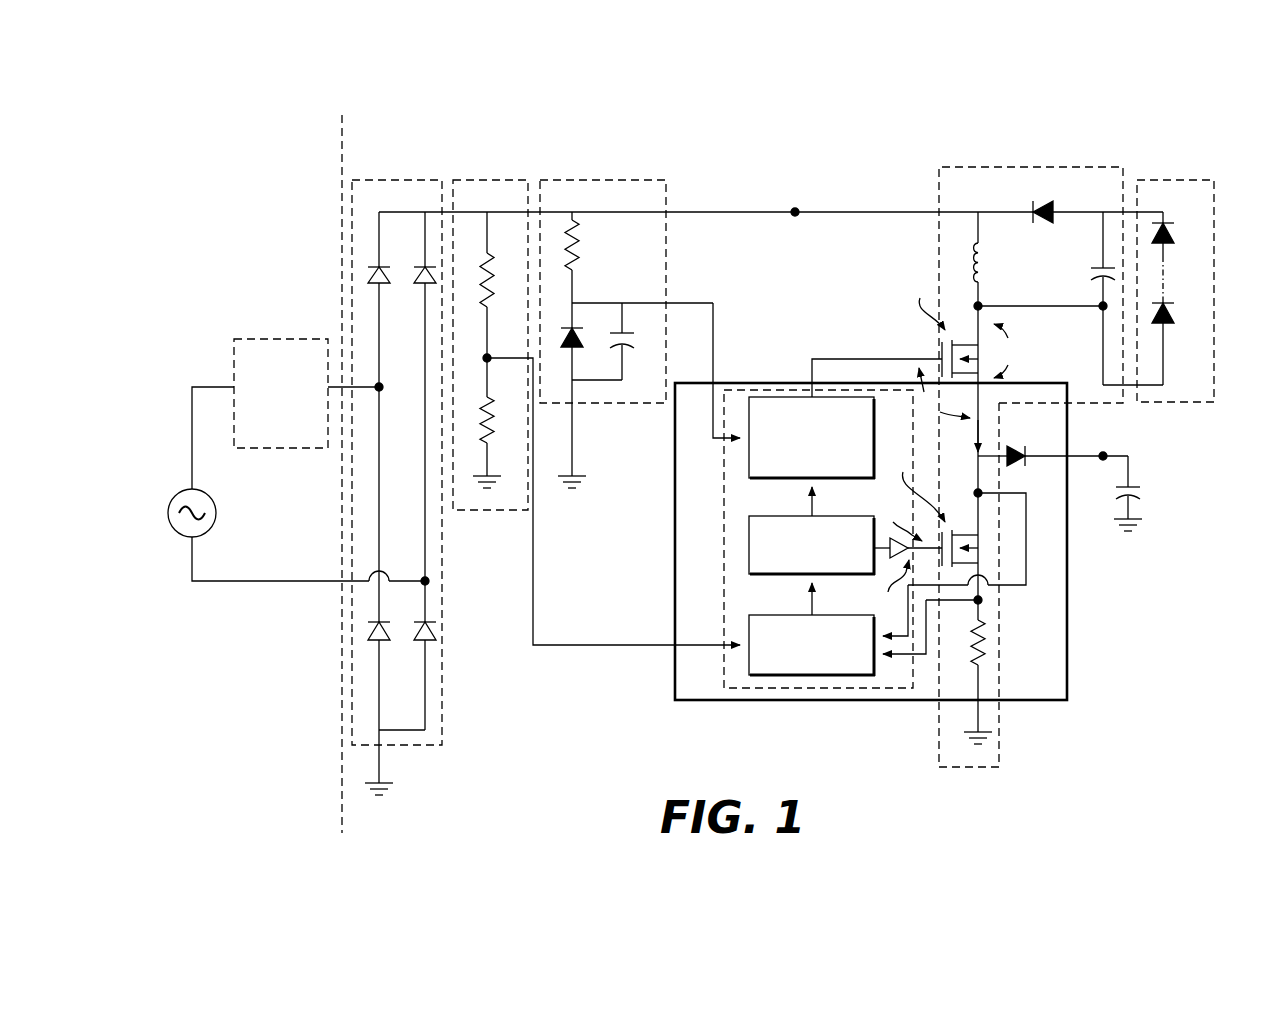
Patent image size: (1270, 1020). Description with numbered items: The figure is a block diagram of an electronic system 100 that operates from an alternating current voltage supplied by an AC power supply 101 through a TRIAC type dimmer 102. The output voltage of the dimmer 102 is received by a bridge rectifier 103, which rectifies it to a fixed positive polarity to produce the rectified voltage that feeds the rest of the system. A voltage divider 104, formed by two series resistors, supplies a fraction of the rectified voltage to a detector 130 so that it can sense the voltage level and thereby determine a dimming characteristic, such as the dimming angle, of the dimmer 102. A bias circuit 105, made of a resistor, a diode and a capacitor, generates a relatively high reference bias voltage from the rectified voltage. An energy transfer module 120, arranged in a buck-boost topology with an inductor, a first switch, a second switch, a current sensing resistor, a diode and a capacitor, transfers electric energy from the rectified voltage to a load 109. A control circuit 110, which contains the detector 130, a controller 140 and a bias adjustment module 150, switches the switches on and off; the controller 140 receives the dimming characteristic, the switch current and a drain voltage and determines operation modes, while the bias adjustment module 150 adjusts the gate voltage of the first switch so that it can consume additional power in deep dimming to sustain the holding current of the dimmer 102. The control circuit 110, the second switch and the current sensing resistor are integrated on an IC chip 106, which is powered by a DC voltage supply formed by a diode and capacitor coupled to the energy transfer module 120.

The electronic system 100 is at (1008, 68).
The AC power supply 101 is at (279, 467).
The dimmer 102 is at (306, 393).
The rectifier 103 is at (402, 178).
The voltage divider 104 is at (492, 178).
The bias circuit 105 is at (582, 178).
The integrated circuit chip 106 is at (770, 702).
The load 109 is at (1216, 306).
The control circuit 110 is at (722, 596).
The energy transfer module 120 is at (1057, 166).
The detector 130 is at (812, 645).
The controller 140 is at (812, 545).
The bias adjustment module 150 is at (812, 438).